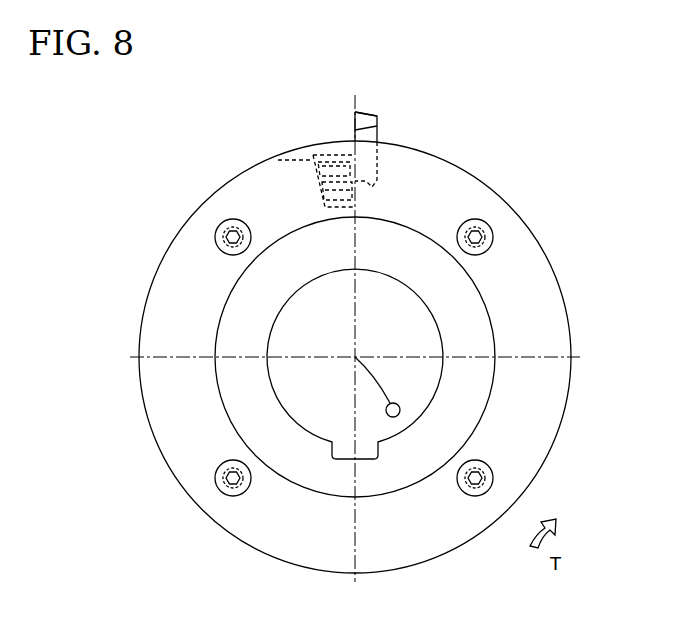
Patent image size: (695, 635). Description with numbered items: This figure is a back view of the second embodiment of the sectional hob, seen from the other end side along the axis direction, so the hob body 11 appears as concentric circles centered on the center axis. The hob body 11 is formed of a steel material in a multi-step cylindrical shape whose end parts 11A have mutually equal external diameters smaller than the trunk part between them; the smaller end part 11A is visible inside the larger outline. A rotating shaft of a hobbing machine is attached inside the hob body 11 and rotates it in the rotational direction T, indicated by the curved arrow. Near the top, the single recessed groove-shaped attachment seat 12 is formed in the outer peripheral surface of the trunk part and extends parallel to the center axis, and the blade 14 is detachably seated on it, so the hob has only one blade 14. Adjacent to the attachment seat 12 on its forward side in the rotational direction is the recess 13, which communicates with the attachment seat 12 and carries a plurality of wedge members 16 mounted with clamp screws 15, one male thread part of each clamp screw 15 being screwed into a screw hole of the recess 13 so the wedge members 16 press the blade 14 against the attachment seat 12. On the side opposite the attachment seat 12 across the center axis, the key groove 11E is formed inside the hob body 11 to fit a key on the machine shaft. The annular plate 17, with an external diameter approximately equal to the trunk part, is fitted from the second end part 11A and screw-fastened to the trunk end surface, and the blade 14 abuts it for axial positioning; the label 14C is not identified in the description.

The hob body 11 is at (203, 153).
The end part 11A is at (477, 333).
The key groove 11E is at (343, 455).
The attachment seat 12 is at (382, 170).
The recess 13 is at (305, 184).
The blade 14 is at (382, 110).
The key end portion 14C is at (353, 108).
The clamp screw 15 is at (328, 165).
The wedge member 16 is at (350, 180).
The plate 17 is at (537, 435).